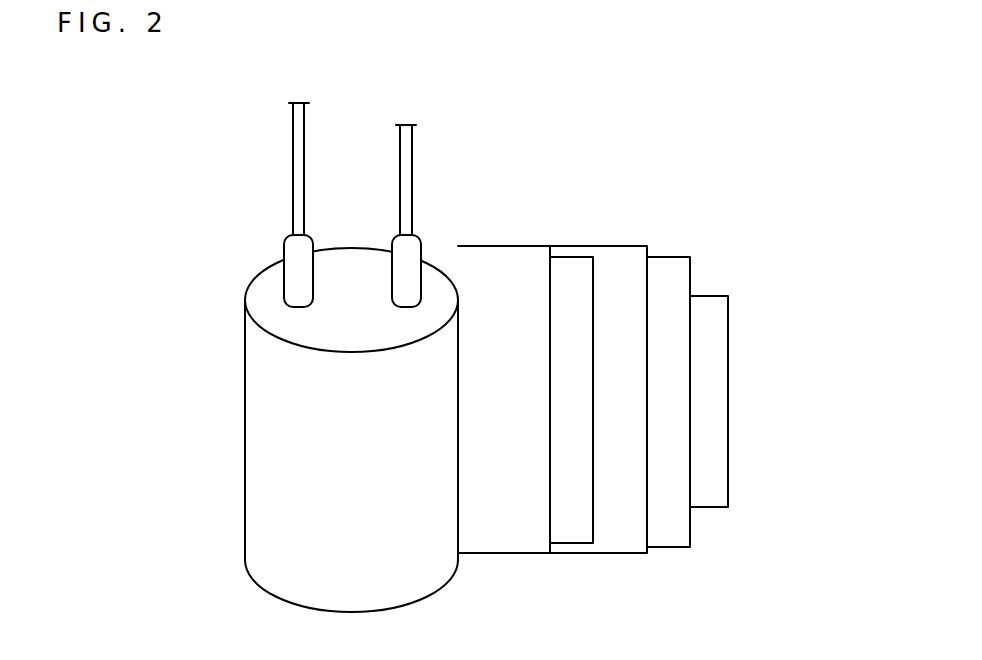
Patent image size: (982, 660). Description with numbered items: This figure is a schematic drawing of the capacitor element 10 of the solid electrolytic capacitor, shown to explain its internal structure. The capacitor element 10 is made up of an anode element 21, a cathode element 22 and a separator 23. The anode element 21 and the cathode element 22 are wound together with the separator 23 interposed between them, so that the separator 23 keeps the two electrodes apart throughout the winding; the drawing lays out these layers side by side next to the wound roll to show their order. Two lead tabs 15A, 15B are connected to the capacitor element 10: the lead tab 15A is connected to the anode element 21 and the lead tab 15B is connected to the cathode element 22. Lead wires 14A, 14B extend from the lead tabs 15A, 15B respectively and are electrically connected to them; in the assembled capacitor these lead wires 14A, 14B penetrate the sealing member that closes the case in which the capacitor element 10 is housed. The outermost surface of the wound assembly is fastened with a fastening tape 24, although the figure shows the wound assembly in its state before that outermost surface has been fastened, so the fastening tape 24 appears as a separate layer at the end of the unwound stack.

The capacitor element 10 is at (548, 106).
The lead wire 14A is at (295, 143).
The lead wire 14B is at (410, 135).
The lead tab 15A is at (293, 255).
The lead tab 15B is at (412, 253).
The anode element 21 is at (580, 523).
The cathode element 22 is at (670, 537).
The separator 23 is at (514, 523).
The fastening tape 24 is at (708, 493).